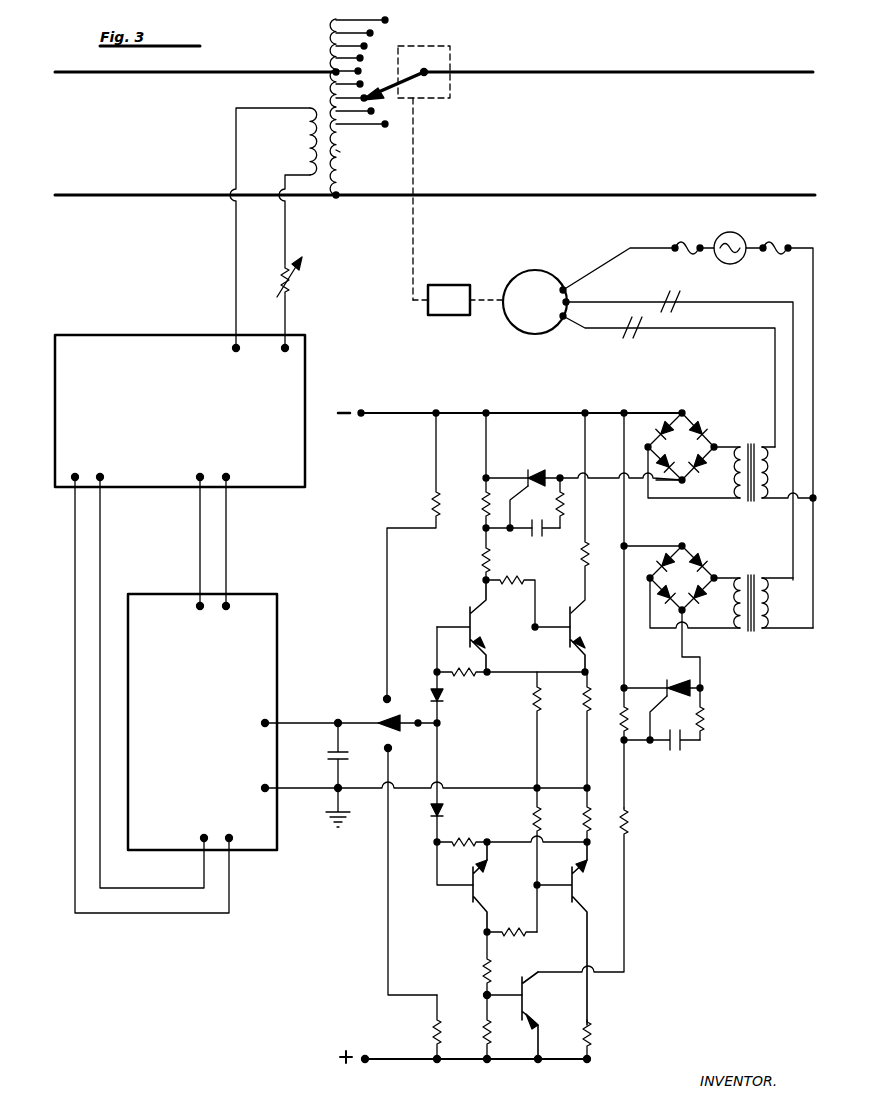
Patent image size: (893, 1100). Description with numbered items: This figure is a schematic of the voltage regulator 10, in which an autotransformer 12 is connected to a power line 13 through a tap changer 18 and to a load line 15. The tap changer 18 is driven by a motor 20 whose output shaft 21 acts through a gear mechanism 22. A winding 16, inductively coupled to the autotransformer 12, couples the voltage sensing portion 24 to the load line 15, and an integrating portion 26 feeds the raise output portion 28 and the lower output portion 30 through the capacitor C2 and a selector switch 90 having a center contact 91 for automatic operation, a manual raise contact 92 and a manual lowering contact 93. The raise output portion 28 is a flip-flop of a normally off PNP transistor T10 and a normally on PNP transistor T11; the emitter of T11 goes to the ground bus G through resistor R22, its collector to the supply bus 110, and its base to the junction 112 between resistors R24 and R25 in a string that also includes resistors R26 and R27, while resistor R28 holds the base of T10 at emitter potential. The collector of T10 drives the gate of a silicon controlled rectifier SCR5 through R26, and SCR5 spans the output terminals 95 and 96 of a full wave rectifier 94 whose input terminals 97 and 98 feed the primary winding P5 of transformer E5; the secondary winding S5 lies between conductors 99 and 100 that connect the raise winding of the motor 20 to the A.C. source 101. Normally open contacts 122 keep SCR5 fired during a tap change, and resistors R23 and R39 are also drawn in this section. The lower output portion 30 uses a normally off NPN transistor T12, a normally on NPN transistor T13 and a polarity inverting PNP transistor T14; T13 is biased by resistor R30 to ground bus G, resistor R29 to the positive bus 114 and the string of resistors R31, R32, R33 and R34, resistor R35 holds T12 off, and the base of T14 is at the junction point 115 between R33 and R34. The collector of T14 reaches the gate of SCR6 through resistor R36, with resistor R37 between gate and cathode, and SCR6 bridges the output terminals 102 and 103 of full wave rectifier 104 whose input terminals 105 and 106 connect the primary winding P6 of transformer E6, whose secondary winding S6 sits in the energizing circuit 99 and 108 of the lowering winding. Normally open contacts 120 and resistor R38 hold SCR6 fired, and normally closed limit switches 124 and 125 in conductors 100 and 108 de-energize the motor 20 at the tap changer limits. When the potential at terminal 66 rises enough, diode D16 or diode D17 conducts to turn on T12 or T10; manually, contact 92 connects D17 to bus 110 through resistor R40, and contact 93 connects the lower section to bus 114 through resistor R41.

The voltage regulator 10 is at (320, 55).
The autotransformer 12 is at (340, 153).
The power line 13 is at (612, 75).
The load line 15 is at (135, 75).
The winding 16 is at (304, 128).
The tap changer 18 is at (437, 46).
The motor 20 is at (532, 270).
The output shaft 21 is at (483, 298).
The gear mechanism 22 is at (445, 284).
The voltage sensing portion 24 is at (137, 354).
The integrating portion 26 is at (154, 609).
The raise output portion 28 is at (522, 683).
The lower output portion 30 is at (521, 906).
The terminal 66 is at (336, 720).
The selector switch 90 is at (398, 731).
The center contact 91 is at (374, 720).
The manual raise contact 92 is at (385, 696).
The manual lowering contact 93 is at (382, 784).
The full wave rectifier 94 is at (693, 453).
The output terminal 95 is at (681, 410).
The output terminal 96 is at (686, 481).
The input terminal 97 is at (646, 448).
The input terminal 98 is at (716, 447).
The conductor 99 is at (813, 246).
The conductor 100 is at (747, 331).
The A.C. source 101 is at (726, 232).
The output terminal 102 is at (685, 608).
The output terminal 103 is at (680, 544).
The full wave rectifier 104 is at (696, 585).
The input terminal 105 is at (649, 577).
The input terminal 106 is at (715, 577).
The conductor 108 is at (782, 282).
The positive supply bus 110 is at (405, 411).
The junction 112 is at (540, 622).
The positive supply bus 114 is at (390, 1060).
The junction point 115 is at (482, 998).
The normally open contacts 120 is at (680, 752).
The normally open contacts 122 is at (535, 542).
The limit switch 124 is at (627, 340).
The limit switch 125 is at (669, 290).
The capacitor C2 is at (326, 754).
The ground bus G is at (347, 821).
The diode D16 is at (432, 828).
The diode D17 is at (430, 690).
The transformer E5 is at (754, 508).
The transformer E6 is at (756, 638).
The primary winding P5 is at (734, 484).
The primary winding P6 is at (734, 612).
The secondary winding S5 is at (764, 474).
The secondary winding S6 is at (772, 603).
The silicon controlled rectifier SCR5 is at (534, 468).
The silicon controlled rectifier SCR6 is at (666, 680).
The resistor R22 is at (581, 702).
The resistor R23 is at (593, 557).
The resistor R24 is at (516, 584).
The resistor R25 is at (530, 702).
The resistor R26 is at (480, 560).
The resistor R27 is at (478, 504).
The resistor R28 is at (472, 680).
The resistor R29 is at (600, 1032).
The resistor R30 is at (582, 821).
The resistor R31 is at (532, 815).
The resistor R32 is at (508, 926).
The resistor R33 is at (482, 976).
The resistor R34 is at (482, 1030).
The resistor R35 is at (458, 834).
The resistor R36 is at (629, 820).
The resistor R37 is at (620, 730).
The resistor R38 is at (708, 710).
The resistor R39 is at (569, 526).
The resistor R40 is at (428, 504).
The resistor R41 is at (424, 1032).
The transistor T10 is at (480, 642).
The transistor T11 is at (579, 629).
The transistor T12 is at (474, 886).
The transistor T13 is at (576, 890).
The transistor T14 is at (532, 994).